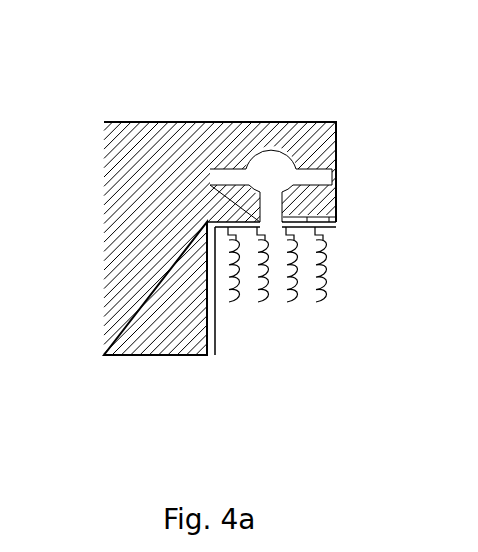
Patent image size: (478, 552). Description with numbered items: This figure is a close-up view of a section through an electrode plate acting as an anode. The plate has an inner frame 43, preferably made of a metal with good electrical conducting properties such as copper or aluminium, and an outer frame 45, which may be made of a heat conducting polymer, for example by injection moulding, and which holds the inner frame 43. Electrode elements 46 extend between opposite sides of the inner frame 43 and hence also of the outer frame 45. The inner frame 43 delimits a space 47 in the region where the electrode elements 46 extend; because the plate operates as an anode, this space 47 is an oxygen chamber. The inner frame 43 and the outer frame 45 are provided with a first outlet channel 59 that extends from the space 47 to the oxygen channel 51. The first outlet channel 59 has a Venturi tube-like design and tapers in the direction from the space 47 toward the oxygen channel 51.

The inner frame 43 is at (217, 340).
The outer frame 45 is at (104, 214).
The electrode elements 46 is at (327, 264).
The space 47 is at (216, 278).
The oxygen channel 51 is at (265, 166).
The first outlet channel 59 is at (292, 217).